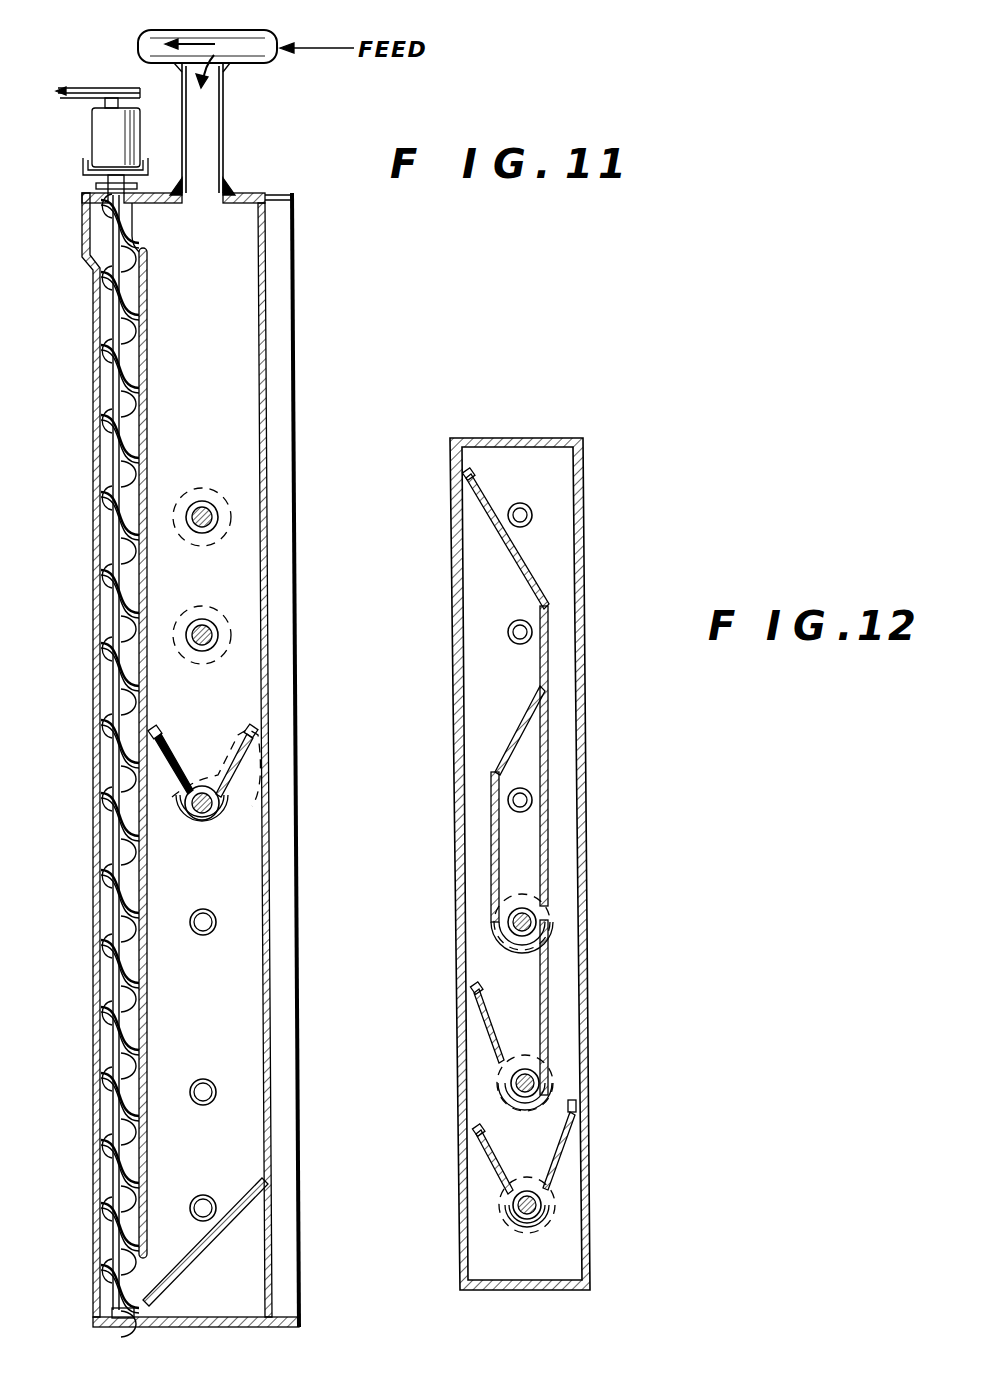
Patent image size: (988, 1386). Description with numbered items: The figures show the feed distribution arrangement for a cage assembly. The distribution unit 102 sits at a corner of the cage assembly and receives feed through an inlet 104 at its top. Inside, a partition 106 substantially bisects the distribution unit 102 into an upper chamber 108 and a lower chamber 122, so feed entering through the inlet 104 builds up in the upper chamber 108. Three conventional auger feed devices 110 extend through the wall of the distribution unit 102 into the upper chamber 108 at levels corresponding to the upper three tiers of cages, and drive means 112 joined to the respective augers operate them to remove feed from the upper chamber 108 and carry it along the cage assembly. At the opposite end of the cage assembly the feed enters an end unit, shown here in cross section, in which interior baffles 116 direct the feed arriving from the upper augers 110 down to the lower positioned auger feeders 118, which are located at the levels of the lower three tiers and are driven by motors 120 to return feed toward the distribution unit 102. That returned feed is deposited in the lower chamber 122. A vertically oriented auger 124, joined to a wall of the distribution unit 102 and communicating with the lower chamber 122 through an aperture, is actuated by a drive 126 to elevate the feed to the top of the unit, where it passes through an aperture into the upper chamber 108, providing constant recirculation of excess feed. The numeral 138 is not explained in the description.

In FIG. 11, the distribution unit 102 is at (312, 356).
In FIG. 11, the inlet 104 is at (222, 127).
In FIG. 11, the partition 106 is at (238, 770).
In FIG. 11, the upper chamber 108 is at (226, 408).
In FIG. 11, the auger feed devices 110 is at (220, 516).
In FIG. 12, the auger feed devices 110 is at (533, 510).
In FIG. 11, the drive means 112 is at (232, 492).
In FIG. 12, the interior baffles 116 is at (552, 600).
In FIG. 11, the auger feeders 118 is at (217, 920).
In FIG. 12, the auger feeders 118 is at (538, 921).
In FIG. 12, the motors 120 is at (546, 896).
In FIG. 11, the lower chamber 122 is at (238, 1013).
In FIG. 11, the vertically oriented auger 124 is at (116, 580).
In FIG. 11, the drive 126 is at (110, 141).
In FIG. 12, the housing 138 is at (598, 524).